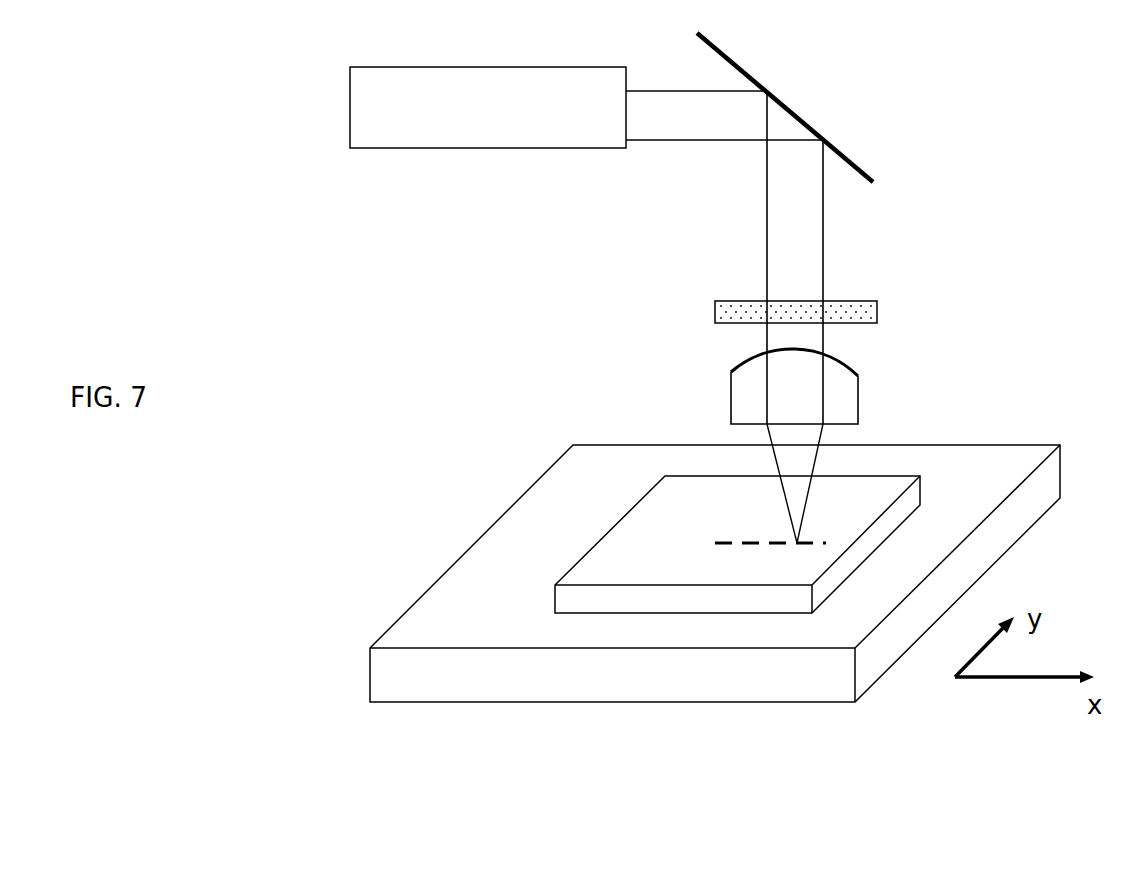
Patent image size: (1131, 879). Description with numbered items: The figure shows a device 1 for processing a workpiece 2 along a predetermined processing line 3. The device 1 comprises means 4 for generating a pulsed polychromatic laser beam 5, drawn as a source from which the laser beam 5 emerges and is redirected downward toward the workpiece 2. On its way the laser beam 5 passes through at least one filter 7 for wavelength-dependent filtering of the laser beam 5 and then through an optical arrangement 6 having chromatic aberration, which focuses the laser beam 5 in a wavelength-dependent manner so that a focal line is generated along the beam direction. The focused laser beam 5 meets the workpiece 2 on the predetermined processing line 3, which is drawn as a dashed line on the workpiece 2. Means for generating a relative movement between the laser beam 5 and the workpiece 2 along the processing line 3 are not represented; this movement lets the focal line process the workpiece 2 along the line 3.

The device 1 is at (715, 492).
The workpiece 2 is at (737, 544).
The predetermined processing line 3 is at (770, 559).
The means for generating a pulsed polychromatic laser beam 4 is at (488, 107).
The pulsed polychromatic laser beam 5 is at (730, 317).
The optical arrangement 6 is at (794, 386).
The filter 7 is at (796, 318).